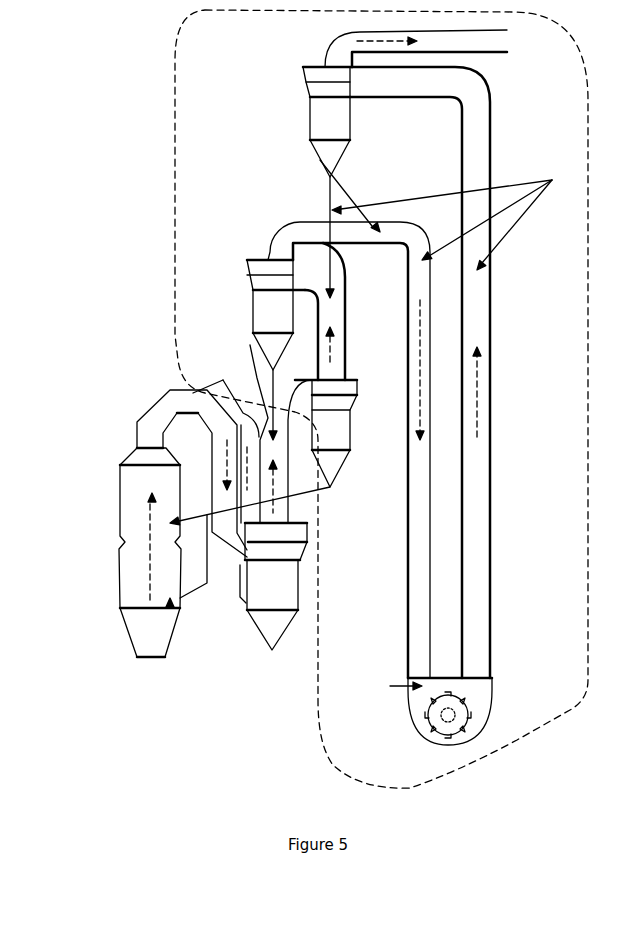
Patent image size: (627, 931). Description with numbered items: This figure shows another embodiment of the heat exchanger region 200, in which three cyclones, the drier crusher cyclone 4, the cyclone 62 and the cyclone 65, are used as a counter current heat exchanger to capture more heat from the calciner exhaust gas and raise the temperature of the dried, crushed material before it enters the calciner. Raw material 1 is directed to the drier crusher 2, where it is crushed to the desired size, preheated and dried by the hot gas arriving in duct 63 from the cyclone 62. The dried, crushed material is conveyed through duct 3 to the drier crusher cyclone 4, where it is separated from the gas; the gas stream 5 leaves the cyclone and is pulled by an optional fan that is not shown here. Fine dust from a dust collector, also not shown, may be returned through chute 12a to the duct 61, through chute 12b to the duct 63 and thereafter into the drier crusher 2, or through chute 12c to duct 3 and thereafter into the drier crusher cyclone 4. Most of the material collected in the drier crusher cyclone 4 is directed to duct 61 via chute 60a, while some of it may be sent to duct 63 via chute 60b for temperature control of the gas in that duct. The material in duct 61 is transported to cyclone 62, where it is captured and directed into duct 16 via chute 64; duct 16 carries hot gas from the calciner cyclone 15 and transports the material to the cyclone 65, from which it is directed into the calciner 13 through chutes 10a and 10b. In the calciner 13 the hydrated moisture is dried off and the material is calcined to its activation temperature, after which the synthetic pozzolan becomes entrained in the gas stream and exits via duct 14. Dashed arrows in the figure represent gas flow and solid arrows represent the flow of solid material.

The heat exchanger region 200 is at (176, 102).
The raw clay material 1 is at (390, 686).
The drier crusher 2 is at (493, 683).
The duct 3 is at (493, 373).
The drier crusher cyclone 4 is at (310, 120).
The gas stream 5 is at (323, 50).
The chute 10a is at (197, 512).
The chute 10b is at (183, 598).
The chute 12a is at (552, 180).
The chute 12b is at (524, 200).
The chute 12c is at (503, 242).
The calciner 13 is at (120, 505).
The duct 14 is at (158, 393).
The calciner cyclone 15 is at (243, 593).
The duct 16 is at (238, 427).
The chute 60a is at (327, 200).
The chute 60b is at (352, 194).
The duct 61 is at (347, 313).
The cyclone 62 is at (247, 262).
The duct 63 is at (272, 245).
The chute 64 is at (257, 378).
The cyclone 65 is at (353, 372).